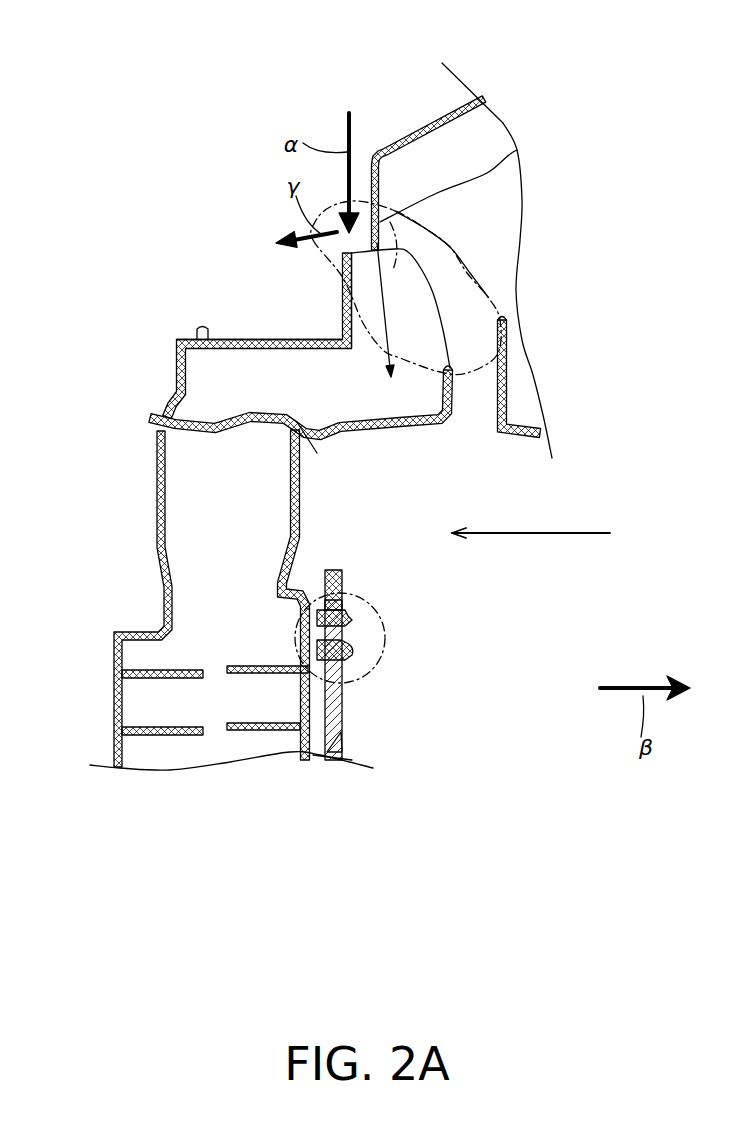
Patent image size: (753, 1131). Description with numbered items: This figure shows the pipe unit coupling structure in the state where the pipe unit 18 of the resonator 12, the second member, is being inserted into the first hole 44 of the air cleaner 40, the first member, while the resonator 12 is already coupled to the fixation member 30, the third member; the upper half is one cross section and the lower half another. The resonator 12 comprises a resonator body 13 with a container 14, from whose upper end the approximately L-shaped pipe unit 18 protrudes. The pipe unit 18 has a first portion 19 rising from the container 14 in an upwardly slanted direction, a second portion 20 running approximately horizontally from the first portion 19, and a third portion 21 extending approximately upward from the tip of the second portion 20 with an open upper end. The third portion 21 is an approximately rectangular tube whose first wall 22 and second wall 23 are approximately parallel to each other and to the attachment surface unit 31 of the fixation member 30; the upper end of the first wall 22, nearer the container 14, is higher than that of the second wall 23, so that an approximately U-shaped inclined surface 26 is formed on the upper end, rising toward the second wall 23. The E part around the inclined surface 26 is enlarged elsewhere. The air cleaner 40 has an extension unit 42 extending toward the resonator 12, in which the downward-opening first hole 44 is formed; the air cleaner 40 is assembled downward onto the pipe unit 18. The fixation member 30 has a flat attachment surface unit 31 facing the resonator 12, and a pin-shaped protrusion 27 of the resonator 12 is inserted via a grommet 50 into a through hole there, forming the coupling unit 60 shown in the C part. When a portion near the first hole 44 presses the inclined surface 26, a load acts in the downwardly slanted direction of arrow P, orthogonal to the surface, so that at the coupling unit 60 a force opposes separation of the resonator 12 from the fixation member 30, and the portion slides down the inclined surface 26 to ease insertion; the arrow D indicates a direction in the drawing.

The resonator 12 is at (347, 433).
The resonator body 13 is at (113, 693).
The container 14 is at (113, 720).
The pipe unit 18 is at (340, 290).
The first portion 19 is at (157, 492).
The second portion 20 is at (245, 337).
The third portion 21 is at (343, 322).
The first wall 22 is at (345, 277).
The second wall 23 is at (453, 393).
The inclined surface 26 is at (467, 273).
The pin-shaped protrusion 27 is at (353, 627).
The fixation member 30 is at (347, 703).
The attachment surface unit 31 is at (313, 757).
The air cleaner 40 is at (420, 124).
The extension unit 42 is at (450, 107).
The first hole 44 is at (517, 150).
The grommet 50 is at (347, 603).
The coupling unit 60 is at (353, 643).
The arrow P is at (383, 300).
The E part E is at (488, 297).
The C part C is at (387, 637).
The direction D is at (560, 533).